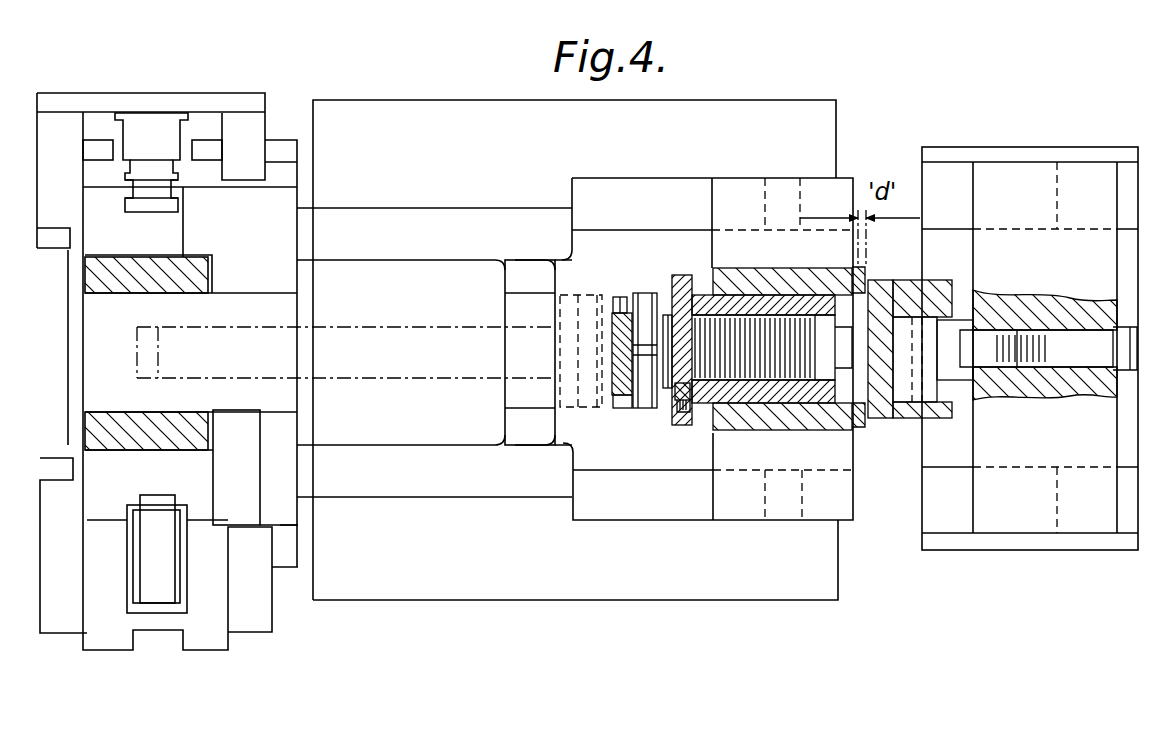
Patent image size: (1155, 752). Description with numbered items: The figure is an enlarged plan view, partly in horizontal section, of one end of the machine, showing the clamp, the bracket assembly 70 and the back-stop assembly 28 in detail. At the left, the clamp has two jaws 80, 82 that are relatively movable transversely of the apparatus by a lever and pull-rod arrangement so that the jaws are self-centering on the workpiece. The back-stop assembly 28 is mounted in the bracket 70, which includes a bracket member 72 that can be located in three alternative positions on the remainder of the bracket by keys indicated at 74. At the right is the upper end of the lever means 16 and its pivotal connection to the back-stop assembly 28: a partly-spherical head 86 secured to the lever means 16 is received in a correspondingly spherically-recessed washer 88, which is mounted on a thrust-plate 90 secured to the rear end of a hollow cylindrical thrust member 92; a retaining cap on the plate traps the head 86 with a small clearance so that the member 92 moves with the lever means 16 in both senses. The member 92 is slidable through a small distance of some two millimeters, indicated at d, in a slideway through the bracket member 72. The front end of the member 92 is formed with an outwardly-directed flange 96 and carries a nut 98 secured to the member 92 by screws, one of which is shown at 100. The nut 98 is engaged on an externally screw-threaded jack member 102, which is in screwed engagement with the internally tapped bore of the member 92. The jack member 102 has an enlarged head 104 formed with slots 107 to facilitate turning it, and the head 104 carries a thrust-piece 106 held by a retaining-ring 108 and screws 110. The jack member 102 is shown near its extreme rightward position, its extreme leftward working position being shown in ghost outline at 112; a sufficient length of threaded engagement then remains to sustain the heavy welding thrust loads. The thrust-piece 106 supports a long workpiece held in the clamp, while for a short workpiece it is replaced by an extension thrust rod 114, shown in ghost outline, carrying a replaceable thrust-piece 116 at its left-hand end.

The lever means 16 is at (1032, 552).
The back-stop assembly 28 is at (662, 414).
The bracket 70 is at (703, 97).
The bracket member 72 is at (840, 453).
The keys 74 is at (793, 507).
The jaw 80 is at (130, 288).
The jaw 82 is at (127, 420).
The partly-spherical head 86 is at (942, 318).
The spherically-recessed washer 88 is at (930, 305).
The thrust-plate 90 is at (912, 300).
The hollow cylindrical thrust member 92 is at (785, 300).
The outwardly-directed flange 96 is at (713, 266).
The nut 98 is at (690, 278).
The screw 100 is at (680, 410).
The jack member 102 is at (770, 400).
The enlarged head 104 is at (641, 292).
The thrust-piece 106 is at (612, 373).
The slots 107 is at (628, 408).
The retaining-ring 108 is at (660, 292).
The screws 110 is at (617, 297).
The ghost outline of jack member 112 is at (593, 295).
The extension thrust rod 114 is at (445, 290).
The replaceable thrust-piece 116 is at (148, 334).